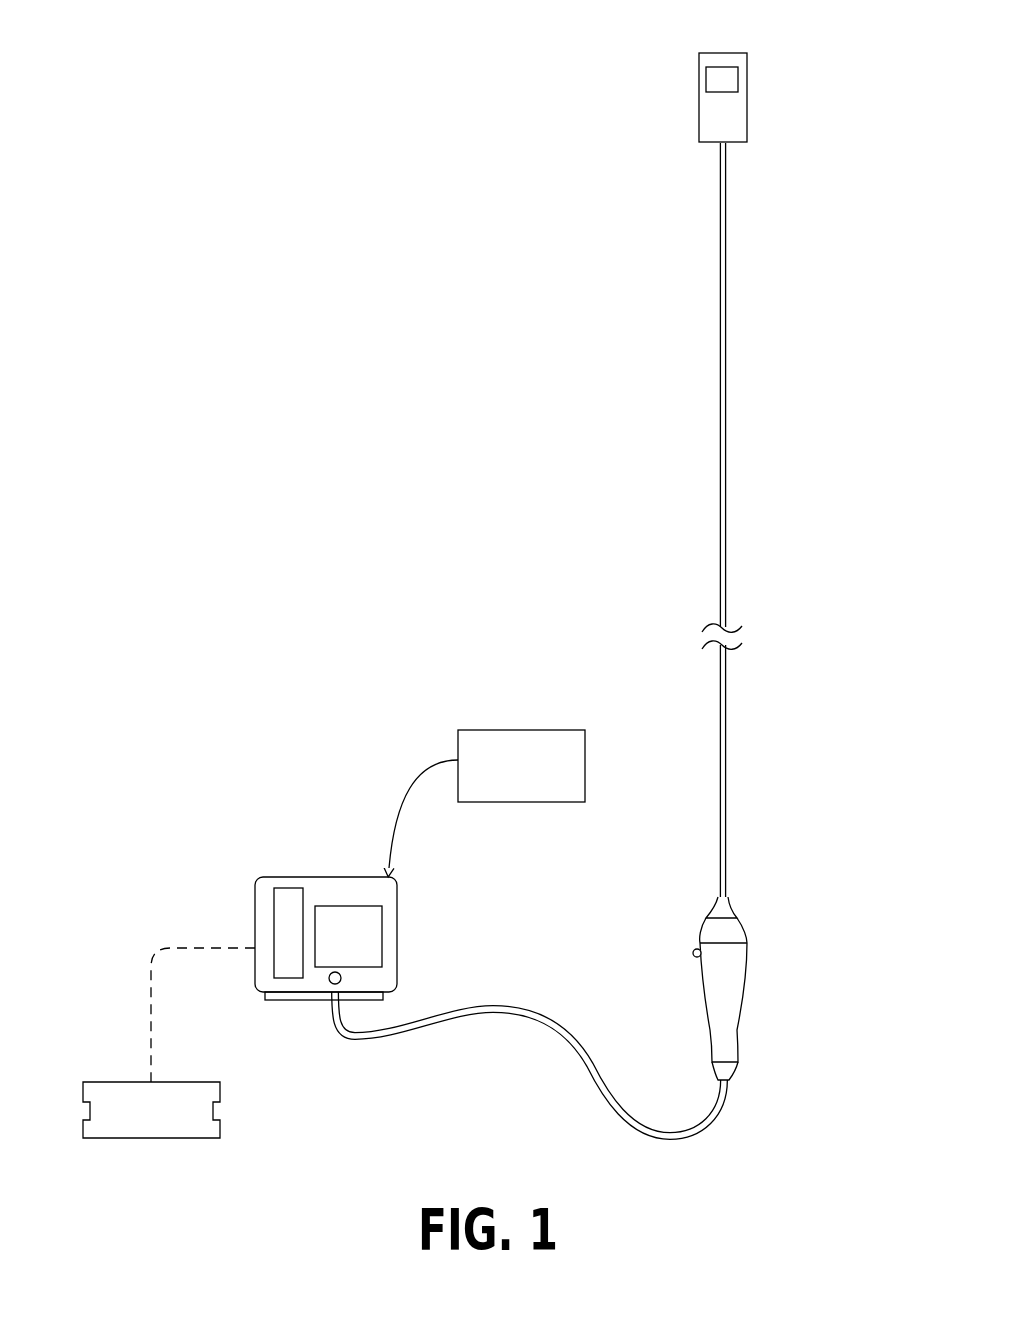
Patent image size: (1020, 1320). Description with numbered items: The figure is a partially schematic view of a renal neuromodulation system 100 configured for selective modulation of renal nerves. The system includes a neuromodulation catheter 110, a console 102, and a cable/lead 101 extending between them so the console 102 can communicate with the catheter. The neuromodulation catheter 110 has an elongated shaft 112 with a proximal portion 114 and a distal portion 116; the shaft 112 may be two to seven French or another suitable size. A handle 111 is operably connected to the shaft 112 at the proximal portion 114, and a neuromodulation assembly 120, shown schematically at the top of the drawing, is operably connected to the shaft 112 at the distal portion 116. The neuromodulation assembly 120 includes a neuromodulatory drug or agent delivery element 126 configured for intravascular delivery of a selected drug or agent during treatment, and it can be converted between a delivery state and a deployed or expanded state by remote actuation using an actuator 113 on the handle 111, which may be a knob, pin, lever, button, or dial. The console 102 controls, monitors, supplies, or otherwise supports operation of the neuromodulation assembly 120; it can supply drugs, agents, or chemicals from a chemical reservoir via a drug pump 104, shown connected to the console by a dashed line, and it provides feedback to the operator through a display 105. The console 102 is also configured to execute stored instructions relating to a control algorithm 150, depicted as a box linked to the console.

The renal neuromodulation system 100 is at (320, 334).
The cable/lead 101 is at (592, 1084).
The console 102 is at (286, 877).
The drug pump 104 is at (118, 1082).
The display 105 is at (330, 906).
The neuromodulation catheter 110 is at (803, 818).
The handle 111 is at (738, 1005).
The elongated shaft 112 is at (727, 524).
The actuator 113 is at (693, 953).
The proximal portion 114 is at (697, 865).
The distal portion 116 is at (696, 169).
The neuromodulation assembly 120 is at (748, 105).
The neuromodulatory drug or agent delivery element 126 is at (706, 78).
The control algorithm 150 is at (587, 752).